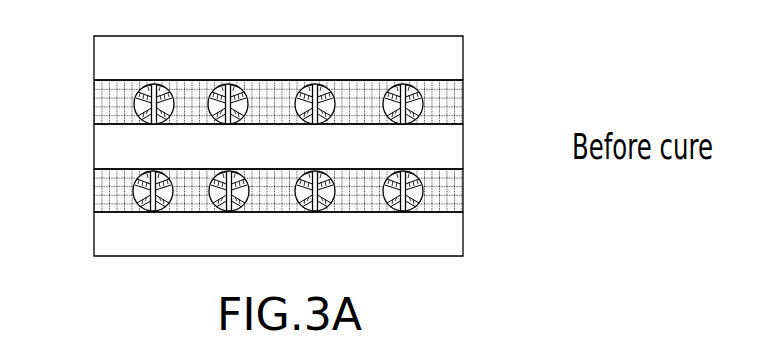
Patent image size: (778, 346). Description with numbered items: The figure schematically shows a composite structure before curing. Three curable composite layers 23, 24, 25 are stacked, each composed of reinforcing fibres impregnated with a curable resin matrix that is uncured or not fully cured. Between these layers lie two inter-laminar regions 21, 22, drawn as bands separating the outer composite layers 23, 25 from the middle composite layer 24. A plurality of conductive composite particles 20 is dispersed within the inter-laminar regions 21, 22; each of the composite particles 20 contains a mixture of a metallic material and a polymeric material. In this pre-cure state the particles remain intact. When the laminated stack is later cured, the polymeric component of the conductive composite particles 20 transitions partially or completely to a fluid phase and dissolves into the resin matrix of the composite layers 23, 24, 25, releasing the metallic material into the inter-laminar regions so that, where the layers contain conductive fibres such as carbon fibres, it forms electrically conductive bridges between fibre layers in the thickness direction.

The conductive composite particles 20 is at (125, 104).
The inter-laminar region 21 is at (471, 108).
The inter-laminar region 22 is at (471, 188).
The composite layer 23 is at (471, 62).
The composite layer 24 is at (471, 148).
The composite layer 25 is at (471, 238).